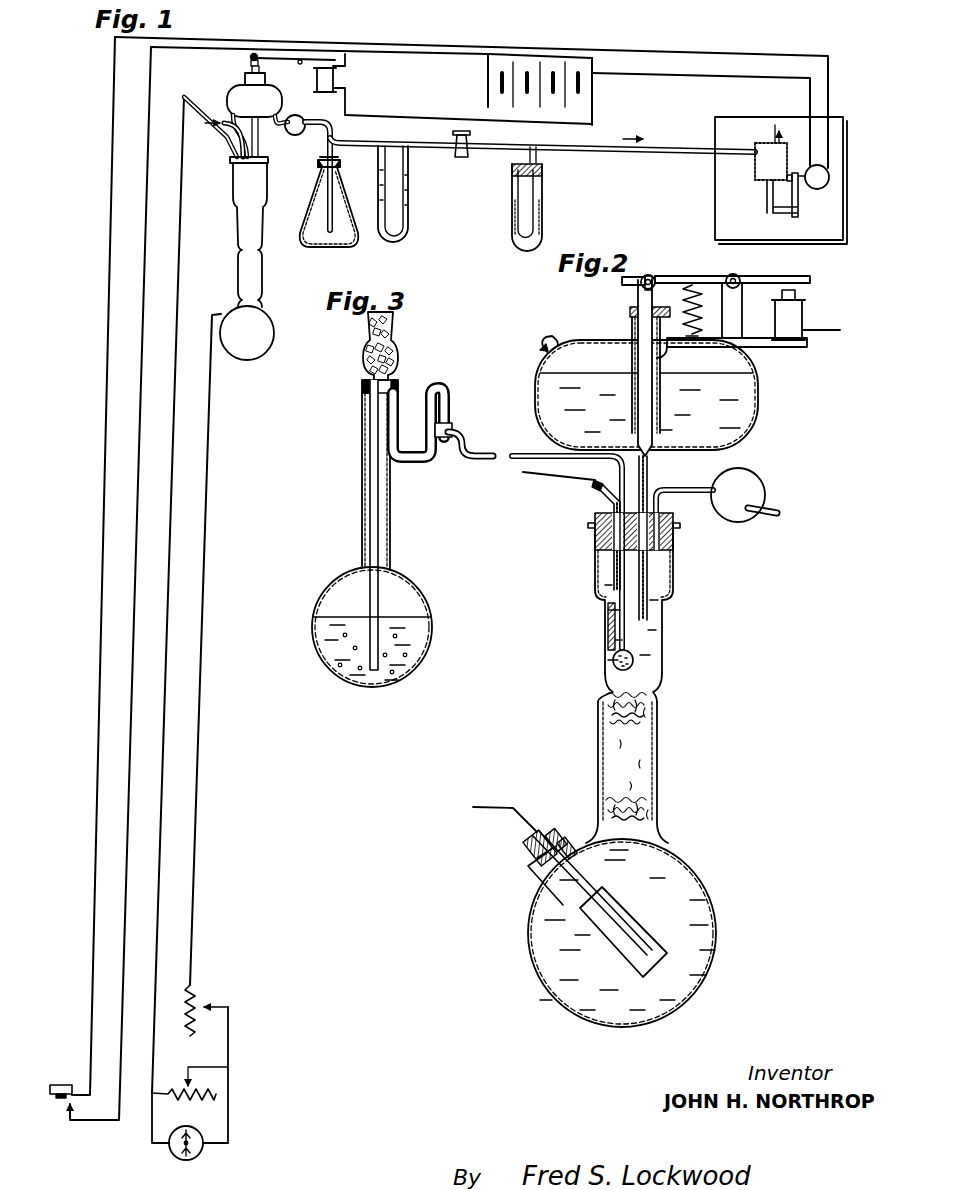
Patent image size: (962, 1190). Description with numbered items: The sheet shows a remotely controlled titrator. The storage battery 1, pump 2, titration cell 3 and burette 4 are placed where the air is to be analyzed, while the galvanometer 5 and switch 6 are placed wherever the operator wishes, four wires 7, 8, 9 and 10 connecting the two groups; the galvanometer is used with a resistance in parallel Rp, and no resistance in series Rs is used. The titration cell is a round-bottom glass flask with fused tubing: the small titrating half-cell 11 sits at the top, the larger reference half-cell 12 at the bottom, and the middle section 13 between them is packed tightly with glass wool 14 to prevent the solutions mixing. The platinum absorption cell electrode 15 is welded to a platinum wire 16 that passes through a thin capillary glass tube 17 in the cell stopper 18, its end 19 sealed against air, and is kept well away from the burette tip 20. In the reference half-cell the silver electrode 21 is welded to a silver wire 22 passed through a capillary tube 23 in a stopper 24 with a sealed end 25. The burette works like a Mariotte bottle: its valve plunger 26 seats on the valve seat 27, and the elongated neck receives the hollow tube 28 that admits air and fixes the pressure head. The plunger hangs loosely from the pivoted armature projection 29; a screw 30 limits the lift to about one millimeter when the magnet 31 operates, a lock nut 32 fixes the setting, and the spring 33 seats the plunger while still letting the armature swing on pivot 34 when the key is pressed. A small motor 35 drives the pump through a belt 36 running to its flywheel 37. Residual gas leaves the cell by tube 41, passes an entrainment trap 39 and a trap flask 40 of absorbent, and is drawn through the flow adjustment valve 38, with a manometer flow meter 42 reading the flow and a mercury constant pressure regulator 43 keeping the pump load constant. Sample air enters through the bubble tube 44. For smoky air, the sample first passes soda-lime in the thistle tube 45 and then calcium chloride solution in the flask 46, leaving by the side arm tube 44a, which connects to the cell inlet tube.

In FIG. 1, the storage battery 1 is at (563, 62).
In FIG. 1, the pump 2 is at (768, 158).
In FIG. 1, the titration cell 3 is at (255, 223).
In FIG. 1, the burette 4 is at (265, 102).
In FIG. 2, the burette 4 is at (580, 351).
In FIG. 1, the galvanometer 5 is at (196, 1136).
In FIG. 1, the switch 6 is at (58, 1084).
In FIG. 1, the wire 7 is at (100, 620).
In FIG. 1, the wire 8 is at (134, 622).
In FIG. 1, the wire 9 is at (168, 622).
In FIG. 2, the wire 9 is at (524, 473).
In FIG. 1, the wire 10 is at (200, 622).
In FIG. 2, the wire 10 is at (500, 808).
In FIG. 2, the titrating half-cell 11 is at (650, 643).
In FIG. 1, the reference half-cell 12 is at (232, 318).
In FIG. 2, the reference half-cell 12 is at (688, 891).
In FIG. 2, the middle section 13 is at (630, 771).
In FIG. 2, the glass wool 14 is at (645, 716).
In FIG. 2, the absorption cell electrode 15 is at (608, 633).
In FIG. 2, the platinum wire 16 is at (608, 562).
In FIG. 2, the capillary glass tube 17 is at (604, 500).
In FIG. 2, the cell stopper 18 is at (668, 523).
In FIG. 2, the sealed end 19 is at (594, 485).
In FIG. 2, the burette tip 20 is at (648, 613).
In FIG. 2, the reference electrode 21 is at (650, 952).
In FIG. 2, the silver wire 22 is at (572, 879).
In FIG. 2, the capillary tube 23 is at (574, 843).
In FIG. 2, the stopper 24 is at (528, 846).
In FIG. 2, the sealed end 25 is at (542, 830).
In FIG. 2, the valve plunger 26 is at (646, 433).
In FIG. 2, the valve seat 27 is at (652, 450).
In FIG. 2, the hollow tube 28 is at (633, 331).
In FIG. 1, the pivoted armature projection 29 is at (250, 60).
In FIG. 2, the pivoted armature projection 29 is at (650, 271).
In FIG. 2, the screw 30 is at (657, 279).
In FIG. 1, the magnet 31 is at (334, 75).
In FIG. 2, the magnet 31 is at (790, 319).
In FIG. 2, the lock nut 32 is at (638, 293).
In FIG. 2, the spring 33 is at (702, 320).
In FIG. 2, the pivot 34 is at (738, 282).
In FIG. 1, the motor 35 is at (820, 190).
In FIG. 1, the belt 36 is at (792, 182).
In FIG. 1, the flywheel 37 is at (797, 208).
In FIG. 1, the valve 38 is at (462, 154).
In FIG. 1, the entrainment trap 39 is at (295, 135).
In FIG. 2, the entrainment trap 39 is at (750, 513).
In FIG. 1, the trap flask 40 is at (323, 233).
In FIG. 1, the tube 41 is at (336, 142).
In FIG. 2, the tube 41 is at (673, 491).
In FIG. 1, the manometer flow meter 42 is at (400, 238).
In FIG. 1, the constant pressure regulator 43 is at (532, 200).
In FIG. 1, the bubble tube 44 is at (225, 122).
In FIG. 2, the bubble tube 44 is at (523, 457).
In FIG. 3, the side arm tube 44a is at (470, 461).
In FIG. 3, the thistle tube 45 is at (376, 452).
In FIG. 3, the flask 46 is at (340, 585).
In FIG. 1, the resistance in series Rs is at (197, 997).
In FIG. 1, the resistance in parallel Rp is at (203, 1090).